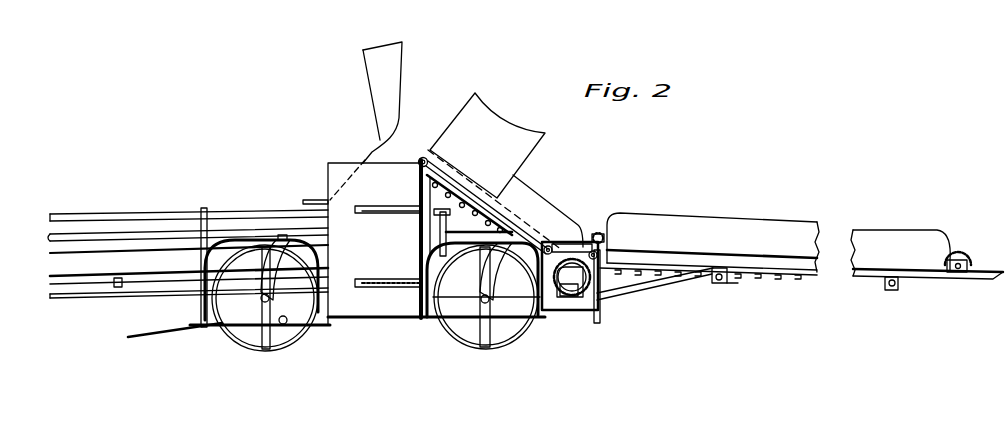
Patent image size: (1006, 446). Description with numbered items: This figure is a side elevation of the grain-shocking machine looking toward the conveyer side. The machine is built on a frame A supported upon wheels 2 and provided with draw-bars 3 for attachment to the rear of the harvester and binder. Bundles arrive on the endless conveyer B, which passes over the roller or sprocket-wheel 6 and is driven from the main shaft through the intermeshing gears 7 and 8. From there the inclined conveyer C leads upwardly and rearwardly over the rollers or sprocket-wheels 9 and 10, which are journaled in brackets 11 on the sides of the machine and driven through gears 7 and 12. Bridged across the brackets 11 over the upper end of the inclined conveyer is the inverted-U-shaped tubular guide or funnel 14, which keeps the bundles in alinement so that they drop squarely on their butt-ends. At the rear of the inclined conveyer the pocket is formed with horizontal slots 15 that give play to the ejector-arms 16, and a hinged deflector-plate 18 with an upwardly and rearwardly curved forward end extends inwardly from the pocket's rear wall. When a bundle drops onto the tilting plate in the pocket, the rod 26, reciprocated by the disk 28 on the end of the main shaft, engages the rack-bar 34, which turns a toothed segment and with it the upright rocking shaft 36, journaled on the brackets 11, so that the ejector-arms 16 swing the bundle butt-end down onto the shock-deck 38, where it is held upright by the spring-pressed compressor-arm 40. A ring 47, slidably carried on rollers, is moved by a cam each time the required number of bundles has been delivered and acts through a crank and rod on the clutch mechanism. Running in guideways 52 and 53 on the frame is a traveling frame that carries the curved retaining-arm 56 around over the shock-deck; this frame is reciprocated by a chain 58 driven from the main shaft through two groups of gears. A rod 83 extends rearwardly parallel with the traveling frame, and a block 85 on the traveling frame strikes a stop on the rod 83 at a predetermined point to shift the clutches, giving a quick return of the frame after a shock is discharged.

The wheels 2 is at (248, 346).
The draw-bars 3 is at (655, 291).
The roller or sprocket-wheel 6 is at (600, 233).
The gear 7 is at (600, 279).
The gear 8 is at (591, 250).
The roller or sprocket-wheel 9 is at (545, 245).
The roller or sprocket-wheel 10 is at (422, 157).
The brackets 11 is at (418, 185).
The gear 12 is at (559, 243).
The inverted-U-shaped tubular guide or funnel 14 is at (506, 170).
The horizontal slots 15 is at (378, 214).
The ejector-arms 16 is at (383, 279).
The deflector-plate 18 is at (366, 121).
The rod 26 is at (567, 300).
The disk 28 is at (576, 300).
The rack-bar 34 is at (463, 281).
The upright rocking shaft 36 is at (440, 230).
The shock-deck 38 is at (288, 325).
The compressor-arm 40 is at (312, 200).
The ring 47 is at (474, 233).
The guideway 52 is at (52, 236).
The guideway 53 is at (69, 297).
The retaining-arm 56 is at (282, 235).
The chain 58 is at (123, 251).
The rod 83 is at (165, 283).
The block 85 is at (117, 288).
The frame A is at (353, 326).
The endless conveyer B is at (793, 273).
The inclined conveyer C is at (494, 198).